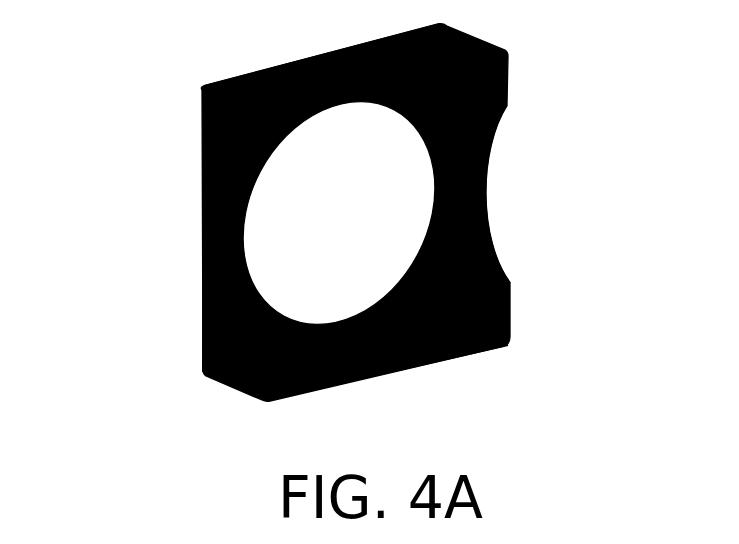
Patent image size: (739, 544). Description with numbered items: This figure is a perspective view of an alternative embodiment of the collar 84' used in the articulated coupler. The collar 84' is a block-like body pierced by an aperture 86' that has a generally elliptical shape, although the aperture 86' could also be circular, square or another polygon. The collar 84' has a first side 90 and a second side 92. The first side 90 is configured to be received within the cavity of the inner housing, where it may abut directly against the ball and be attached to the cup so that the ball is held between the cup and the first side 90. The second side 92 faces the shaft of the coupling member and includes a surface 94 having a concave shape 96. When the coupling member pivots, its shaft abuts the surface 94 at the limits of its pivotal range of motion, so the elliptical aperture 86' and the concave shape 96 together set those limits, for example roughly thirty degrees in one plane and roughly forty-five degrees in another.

The collar 84' is at (272, 213).
The aperture 86' is at (393, 213).
The first side 90 is at (200, 253).
The second side 92 is at (507, 83).
The surface 94 is at (460, 278).
The concave shape 96 is at (423, 312).